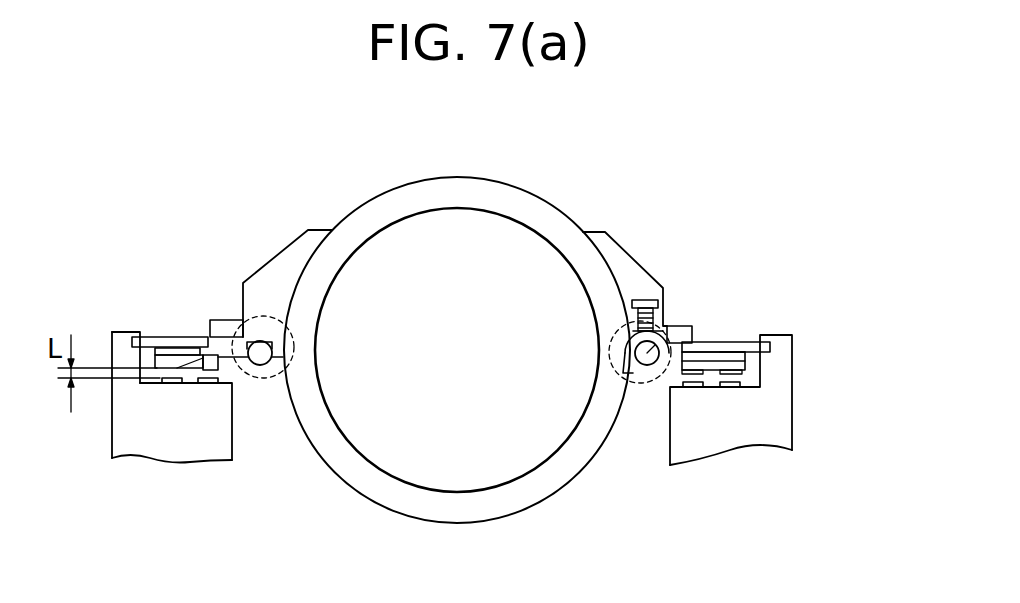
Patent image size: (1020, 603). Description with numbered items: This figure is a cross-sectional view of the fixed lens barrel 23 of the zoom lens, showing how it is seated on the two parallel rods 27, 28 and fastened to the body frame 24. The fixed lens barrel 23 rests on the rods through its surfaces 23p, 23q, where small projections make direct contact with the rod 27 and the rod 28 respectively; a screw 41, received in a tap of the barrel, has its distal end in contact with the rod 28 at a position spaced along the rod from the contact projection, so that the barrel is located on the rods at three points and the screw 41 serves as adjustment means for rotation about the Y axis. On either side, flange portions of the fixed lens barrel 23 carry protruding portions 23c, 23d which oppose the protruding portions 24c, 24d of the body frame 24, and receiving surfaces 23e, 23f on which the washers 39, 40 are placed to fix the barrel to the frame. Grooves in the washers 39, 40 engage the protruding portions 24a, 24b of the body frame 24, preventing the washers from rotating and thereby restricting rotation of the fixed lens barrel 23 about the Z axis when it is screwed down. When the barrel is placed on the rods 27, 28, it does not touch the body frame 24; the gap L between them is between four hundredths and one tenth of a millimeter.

The fixed lens barrel 23 is at (545, 497).
The surface 23p is at (249, 341).
The surface 23q is at (624, 318).
The rod 27 is at (262, 341).
The rod 28 is at (670, 325).
The screw 41 is at (643, 298).
The protruding portion 23d is at (220, 320).
The washer 40 is at (153, 337).
The receiving surface 23f is at (160, 348).
The protruding portion 24b is at (113, 329).
The body frame 24 is at (142, 447).
The protruding portion 24d is at (210, 383).
The receiving surface 23e is at (697, 350).
The washer 39 is at (747, 343).
The protruding portion 23c is at (745, 373).
The protruding portion 24c is at (732, 388).
The protruding portion 24a is at (783, 355).